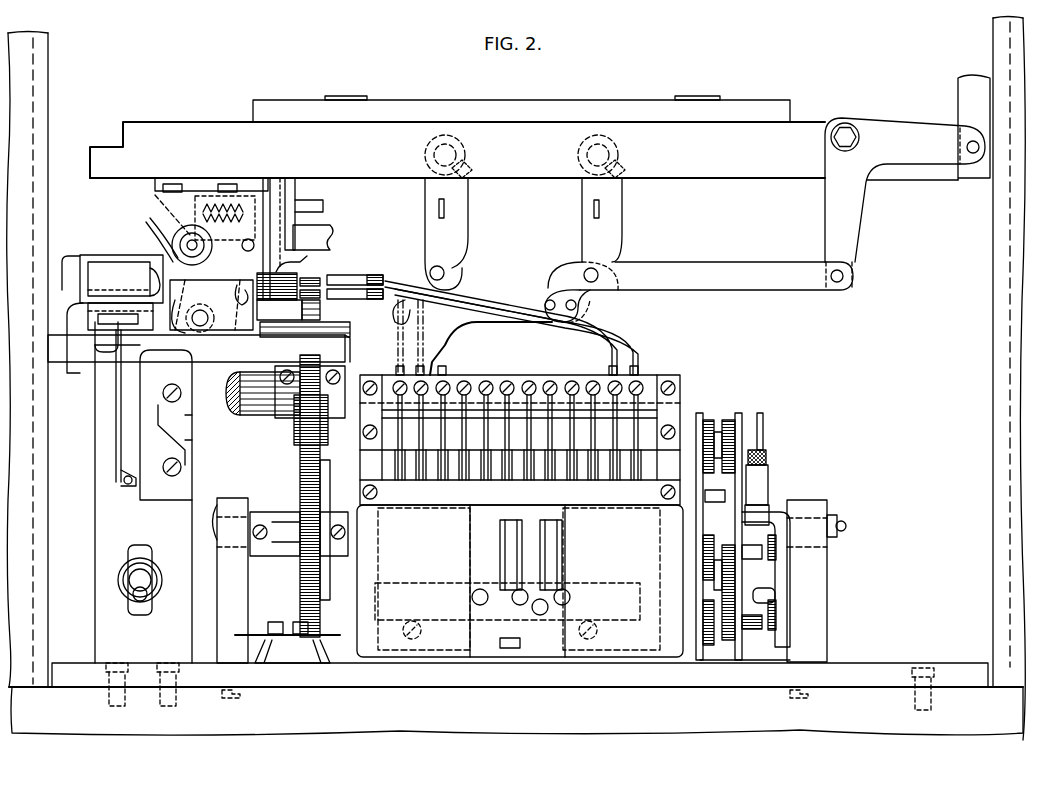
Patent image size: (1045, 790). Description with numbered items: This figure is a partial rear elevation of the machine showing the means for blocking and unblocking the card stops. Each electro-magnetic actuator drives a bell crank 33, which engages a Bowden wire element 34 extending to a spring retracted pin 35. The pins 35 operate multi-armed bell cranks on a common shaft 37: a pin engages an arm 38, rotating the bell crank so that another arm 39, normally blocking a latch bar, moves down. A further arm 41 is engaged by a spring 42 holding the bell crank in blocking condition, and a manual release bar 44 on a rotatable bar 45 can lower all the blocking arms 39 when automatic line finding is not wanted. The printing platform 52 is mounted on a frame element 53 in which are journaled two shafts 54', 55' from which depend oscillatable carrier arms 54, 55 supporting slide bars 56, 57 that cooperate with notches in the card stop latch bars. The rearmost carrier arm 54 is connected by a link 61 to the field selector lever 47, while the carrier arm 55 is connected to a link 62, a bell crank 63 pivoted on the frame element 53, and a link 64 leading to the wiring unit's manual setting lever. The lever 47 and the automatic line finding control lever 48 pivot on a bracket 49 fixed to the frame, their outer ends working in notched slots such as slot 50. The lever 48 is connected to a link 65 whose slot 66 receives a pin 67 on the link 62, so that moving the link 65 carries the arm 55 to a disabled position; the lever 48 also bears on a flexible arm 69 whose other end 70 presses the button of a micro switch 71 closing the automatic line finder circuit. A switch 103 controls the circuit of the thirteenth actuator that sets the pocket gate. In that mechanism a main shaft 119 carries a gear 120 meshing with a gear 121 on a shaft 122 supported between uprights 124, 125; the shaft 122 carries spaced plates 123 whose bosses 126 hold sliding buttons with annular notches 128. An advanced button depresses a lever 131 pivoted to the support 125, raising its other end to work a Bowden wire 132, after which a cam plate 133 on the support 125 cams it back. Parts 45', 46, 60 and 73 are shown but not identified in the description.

The bell crank 33 is at (545, 380).
The Bowden wire element 34 is at (372, 290).
The spring retracted pin 35 is at (258, 298).
The common shaft 37 is at (211, 305).
The arm 38 is at (235, 309).
The arm 39 is at (308, 258).
The arm 41 is at (251, 238).
The spring 42 is at (212, 205).
The manually operated release bar 44 is at (213, 266).
The rotatable bar 45 is at (147, 208).
The lever arm 45' is at (152, 229).
The studs 46 is at (330, 97).
The field selector lever 47 is at (136, 256).
The automatic line finding control lever 48 is at (100, 352).
The bracket 49 is at (68, 258).
The notched slot 50 is at (95, 257).
The printing platform 52 is at (478, 103).
The frame element 53 is at (745, 165).
The carrier arm 54 is at (467, 234).
The shaft 54' is at (469, 156).
The carrier arm 55 is at (602, 234).
The shaft 55' is at (617, 156).
The slide bar 56 is at (438, 208).
The slide bar 57 is at (593, 213).
The block 60 is at (331, 238).
The link 61 is at (194, 318).
The link 62 is at (708, 274).
The bell crank 63 is at (826, 212).
The link 64 is at (960, 95).
The link 65 is at (215, 346).
The slot 66 is at (579, 311).
The pin 67 is at (547, 299).
The flexible arm 69 is at (115, 444).
The end 70 is at (125, 477).
The micro switch 71 is at (148, 497).
The bracket 73 is at (302, 193).
The switch 103 is at (150, 580).
The main shaft 119 is at (243, 414).
The gear 120 is at (298, 402).
The gear 121 is at (300, 482).
The shaft 122 is at (286, 550).
The spaced plates 123 is at (736, 413).
The upright 124 is at (226, 498).
The upright 125 is at (820, 500).
The bosses 126 is at (726, 572).
The annular notches 128 is at (712, 468).
The lever 131 is at (762, 642).
The Bowden wire 132 is at (767, 492).
The cam plate 133 is at (776, 590).